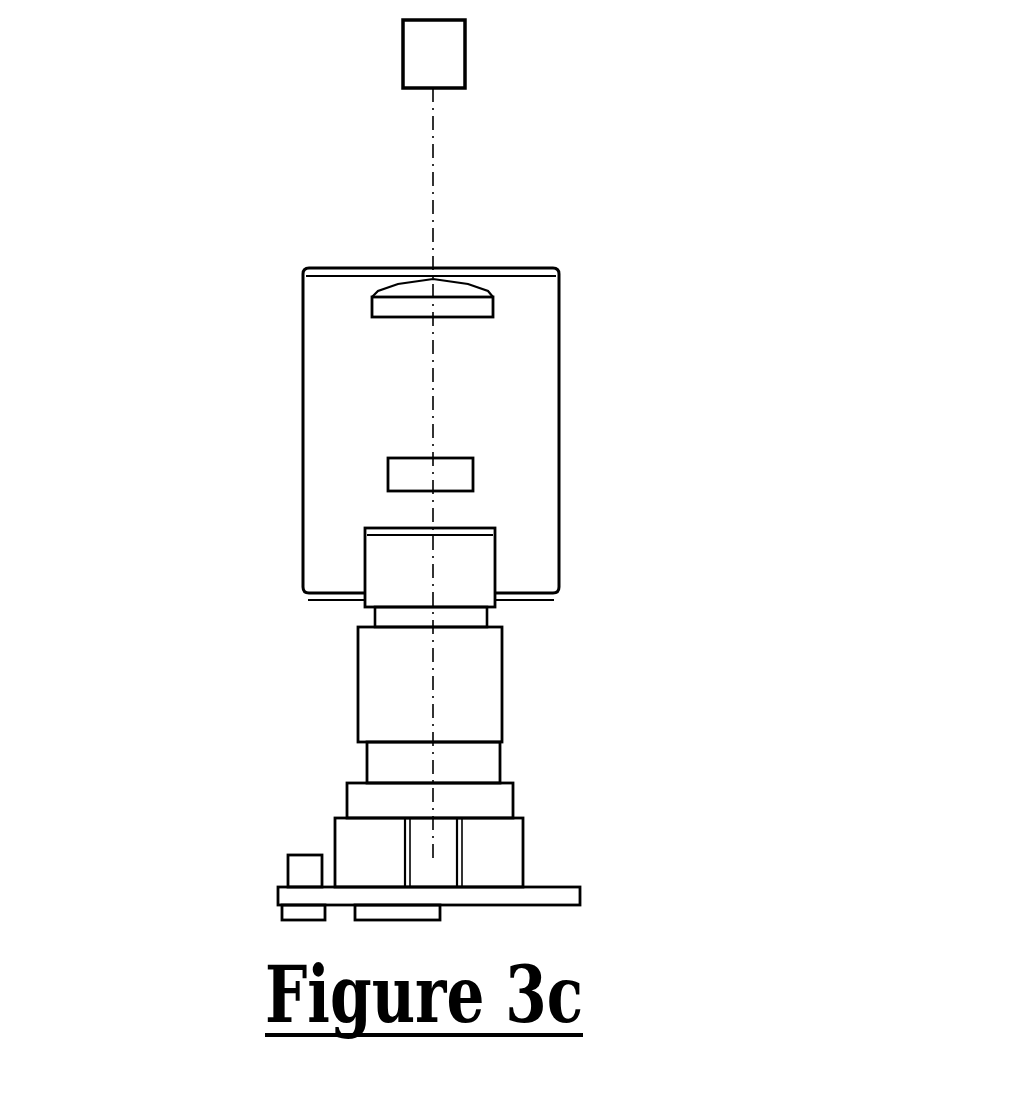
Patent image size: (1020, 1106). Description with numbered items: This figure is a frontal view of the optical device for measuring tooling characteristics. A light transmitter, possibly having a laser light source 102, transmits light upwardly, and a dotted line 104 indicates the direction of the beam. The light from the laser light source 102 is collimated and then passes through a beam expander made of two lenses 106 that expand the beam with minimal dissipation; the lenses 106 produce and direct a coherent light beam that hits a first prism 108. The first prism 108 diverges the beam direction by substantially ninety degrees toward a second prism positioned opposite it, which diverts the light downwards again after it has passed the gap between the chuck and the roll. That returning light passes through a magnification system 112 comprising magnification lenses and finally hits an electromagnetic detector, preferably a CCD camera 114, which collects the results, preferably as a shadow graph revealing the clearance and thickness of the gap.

The laser light source 102 is at (512, 698).
The dotted line 104 is at (457, 161).
The lenses 106 is at (520, 316).
The first prism 108 is at (487, 41).
The magnification system 112 is at (305, 400).
The CCD camera 114 is at (320, 838).